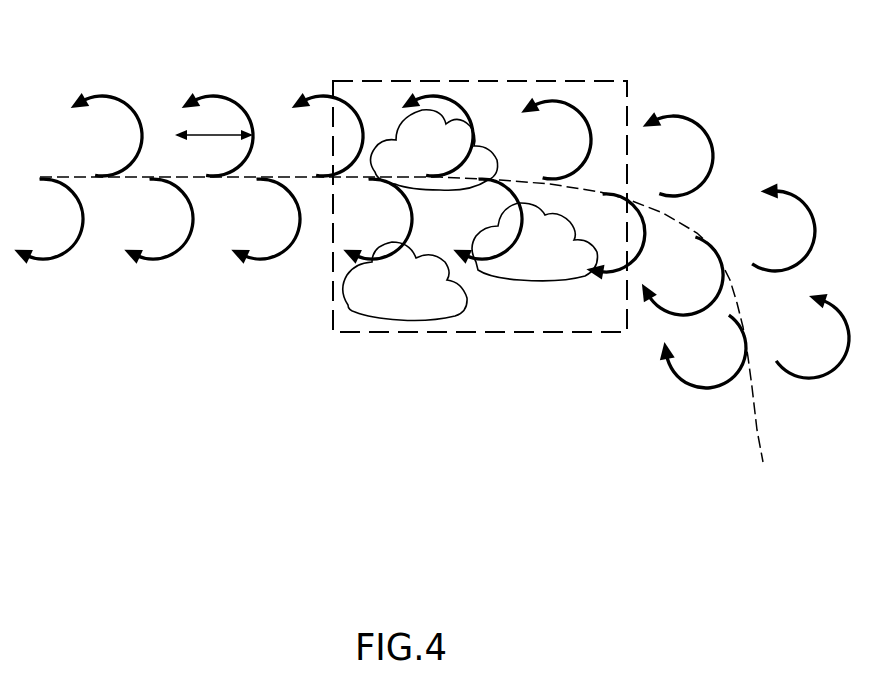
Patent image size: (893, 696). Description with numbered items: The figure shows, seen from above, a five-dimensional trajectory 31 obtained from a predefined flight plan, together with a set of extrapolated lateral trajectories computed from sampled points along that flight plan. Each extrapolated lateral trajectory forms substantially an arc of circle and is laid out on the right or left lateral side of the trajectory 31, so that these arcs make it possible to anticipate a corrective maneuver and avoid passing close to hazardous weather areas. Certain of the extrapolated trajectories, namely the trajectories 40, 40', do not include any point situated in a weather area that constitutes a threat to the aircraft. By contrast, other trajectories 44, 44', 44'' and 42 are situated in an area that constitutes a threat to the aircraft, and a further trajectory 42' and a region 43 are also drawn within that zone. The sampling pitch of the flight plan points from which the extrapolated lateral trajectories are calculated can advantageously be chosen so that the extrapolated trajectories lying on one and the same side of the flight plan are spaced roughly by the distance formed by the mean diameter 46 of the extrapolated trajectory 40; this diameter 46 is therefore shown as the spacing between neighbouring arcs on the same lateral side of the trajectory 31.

The 5D trajectory 31 is at (748, 442).
The extrapolated trajectory 40 is at (229, 103).
The extrapolated trajectory 40' is at (167, 261).
The extrapolated trajectory 42 is at (556, 95).
The vortex 42' is at (487, 286).
The region 43 is at (586, 333).
The extrapolated trajectory 44 is at (405, 320).
The extrapolated trajectory 44' is at (535, 299).
The extrapolated trajectory 44'' is at (434, 112).
The mean diameter 46 is at (182, 122).